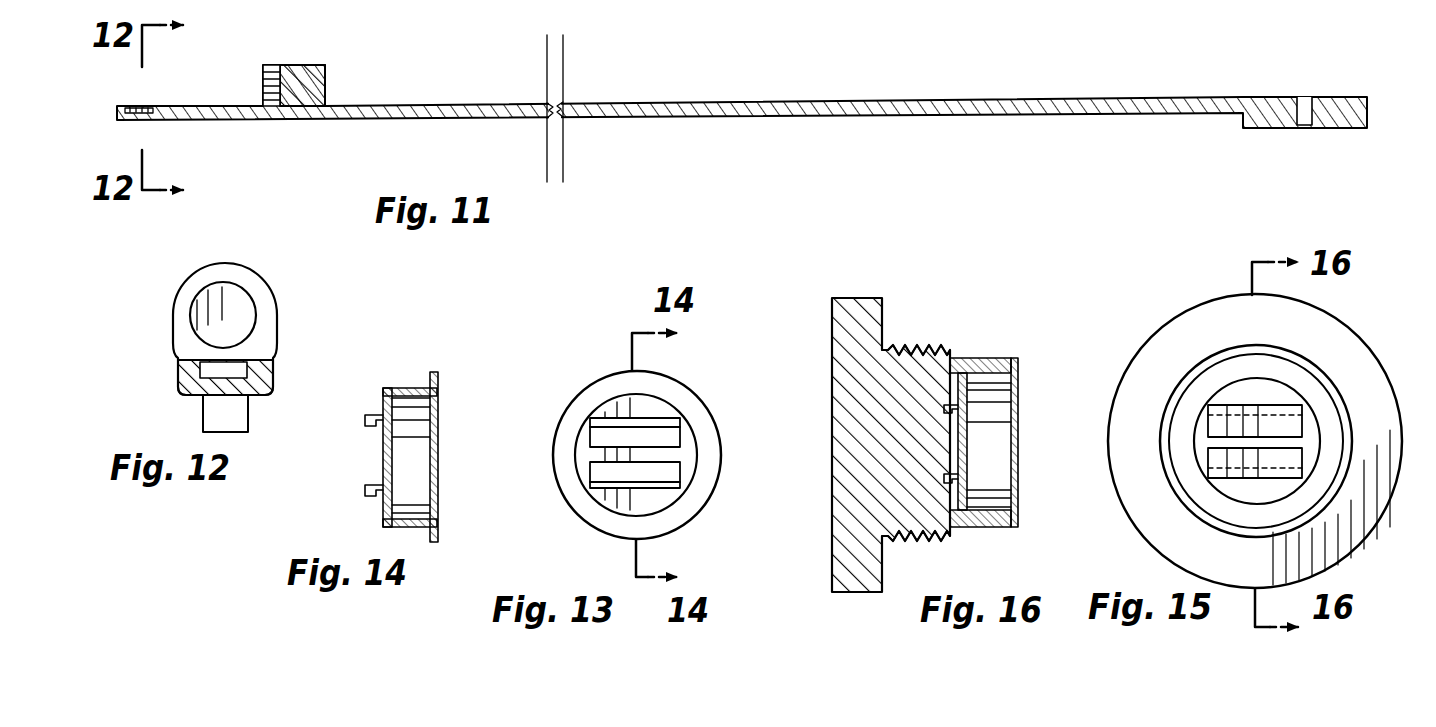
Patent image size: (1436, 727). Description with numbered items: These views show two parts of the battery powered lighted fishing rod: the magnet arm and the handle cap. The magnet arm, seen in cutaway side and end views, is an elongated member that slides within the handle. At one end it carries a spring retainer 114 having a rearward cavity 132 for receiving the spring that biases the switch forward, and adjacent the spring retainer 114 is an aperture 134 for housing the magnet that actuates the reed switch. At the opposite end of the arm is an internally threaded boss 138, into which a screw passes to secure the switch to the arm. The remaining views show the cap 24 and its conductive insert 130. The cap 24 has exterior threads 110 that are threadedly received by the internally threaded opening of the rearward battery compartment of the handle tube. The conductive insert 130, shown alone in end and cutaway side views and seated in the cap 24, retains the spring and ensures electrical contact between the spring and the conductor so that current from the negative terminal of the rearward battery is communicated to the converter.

In FIG. 16, the cap 24 is at (832, 322).
In FIG. 15, the cap 24 is at (1345, 325).
In FIG. 16, the exterior threads 110 is at (908, 350).
In FIG. 11, the spring retainer 114 is at (328, 72).
In FIG. 12, the spring retainer 114 is at (172, 308).
In FIG. 14, the conductive insert 130 is at (410, 388).
In FIG. 13, the conductive insert 130 is at (683, 384).
In FIG. 16, the conductive insert 130 is at (1017, 375).
In FIG. 15, the conductive insert 130 is at (1308, 448).
In FIG. 11, the rearward cavity 132 is at (268, 87).
In FIG. 12, the rearward cavity 132 is at (215, 316).
In FIG. 11, the aperture 134 is at (141, 106).
In FIG. 12, the aperture 134 is at (190, 362).
In FIG. 11, the internally threaded boss 138 is at (1305, 100).